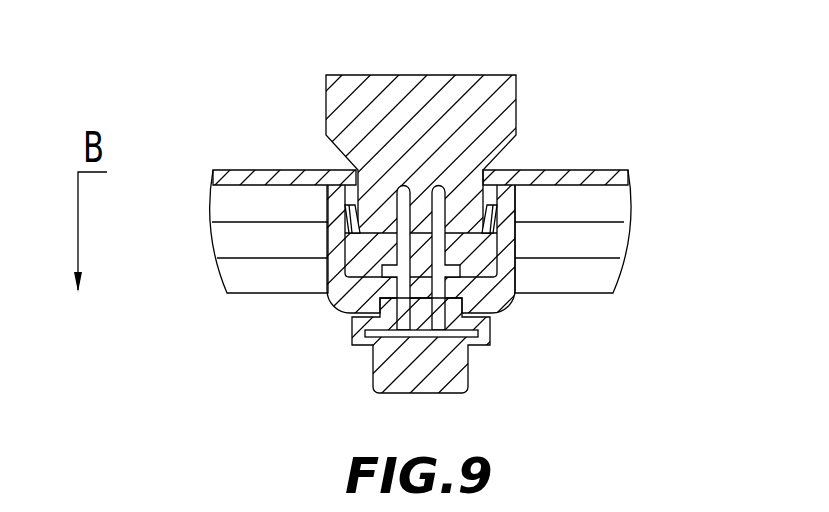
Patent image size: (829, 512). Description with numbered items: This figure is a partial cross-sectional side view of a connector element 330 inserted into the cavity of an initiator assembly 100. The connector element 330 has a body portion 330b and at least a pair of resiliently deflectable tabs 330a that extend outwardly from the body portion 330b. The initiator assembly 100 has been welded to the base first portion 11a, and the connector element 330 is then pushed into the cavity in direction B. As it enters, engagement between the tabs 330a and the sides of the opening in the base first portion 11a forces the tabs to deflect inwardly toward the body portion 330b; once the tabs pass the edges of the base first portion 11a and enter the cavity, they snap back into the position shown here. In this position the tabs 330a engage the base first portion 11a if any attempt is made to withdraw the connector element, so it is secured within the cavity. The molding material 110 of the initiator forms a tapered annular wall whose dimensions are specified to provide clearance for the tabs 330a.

The connector element 330 is at (517, 88).
The resiliently deflectable tabs 330a is at (347, 210).
The body portion 330b is at (483, 205).
The base first portion 11a is at (558, 171).
The initiator assembly 100 is at (337, 305).
The molding material 110 is at (353, 345).